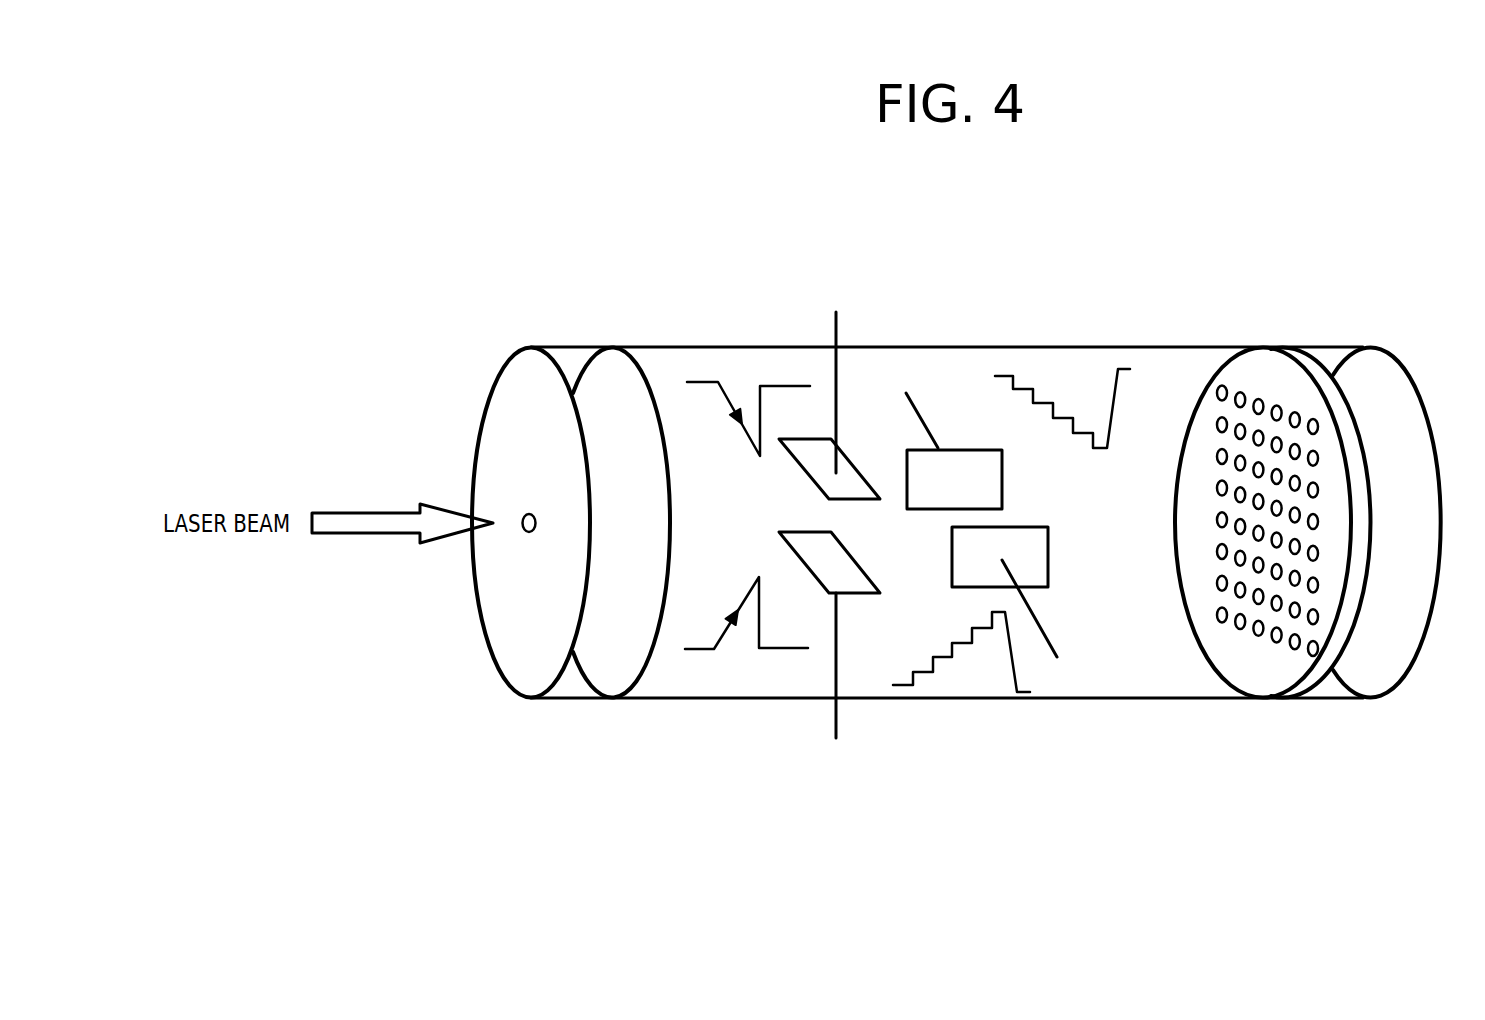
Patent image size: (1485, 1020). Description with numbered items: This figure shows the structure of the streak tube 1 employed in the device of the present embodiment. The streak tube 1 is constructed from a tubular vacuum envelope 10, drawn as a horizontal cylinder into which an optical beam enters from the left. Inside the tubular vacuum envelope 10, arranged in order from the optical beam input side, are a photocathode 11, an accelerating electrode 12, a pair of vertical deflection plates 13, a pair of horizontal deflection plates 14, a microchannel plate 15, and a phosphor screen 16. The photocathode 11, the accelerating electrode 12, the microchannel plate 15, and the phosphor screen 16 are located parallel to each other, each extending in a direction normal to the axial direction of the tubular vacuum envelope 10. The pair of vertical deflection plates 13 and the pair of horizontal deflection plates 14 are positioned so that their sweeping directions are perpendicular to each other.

The streak tube 1 is at (1369, 703).
The tubular vacuum envelope 10 is at (1080, 347).
The photocathode 11 is at (535, 367).
The accelerating electrode 12 is at (610, 363).
The pair of vertical deflection plates 13 is at (807, 438).
The pair of horizontal deflection plates 14 is at (962, 448).
The microchannel plate (MCP) 15 is at (1265, 360).
The phosphor screen 16 is at (1376, 353).